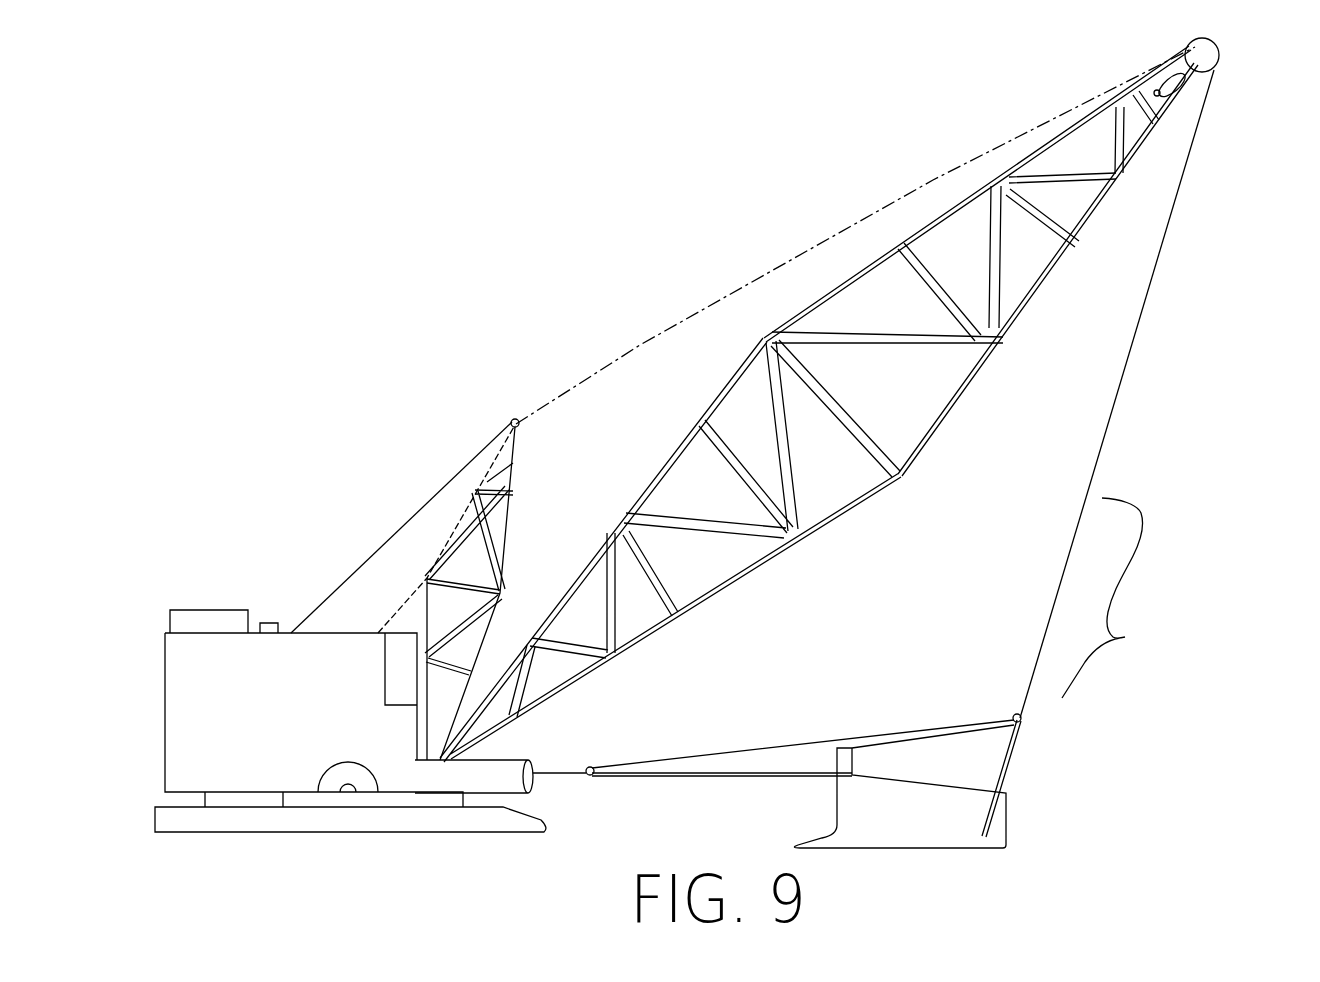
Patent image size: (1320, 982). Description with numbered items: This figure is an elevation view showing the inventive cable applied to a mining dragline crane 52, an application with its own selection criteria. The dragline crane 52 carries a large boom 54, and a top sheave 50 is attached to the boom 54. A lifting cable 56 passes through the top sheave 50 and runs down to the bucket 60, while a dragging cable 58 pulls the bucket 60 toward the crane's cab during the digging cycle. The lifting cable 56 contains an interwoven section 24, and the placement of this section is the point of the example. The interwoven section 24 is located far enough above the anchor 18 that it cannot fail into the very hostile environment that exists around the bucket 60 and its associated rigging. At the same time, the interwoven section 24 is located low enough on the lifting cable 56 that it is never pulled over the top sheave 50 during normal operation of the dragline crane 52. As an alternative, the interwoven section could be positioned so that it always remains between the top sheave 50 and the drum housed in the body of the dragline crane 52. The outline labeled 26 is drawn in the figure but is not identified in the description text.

The anchor 18 is at (1020, 727).
The interwoven section 24 is at (1108, 440).
The counterweight outline 26 is at (1125, 637).
The top sheave 50 is at (1212, 36).
The mining dragline crane 52 is at (523, 227).
The boom 54 is at (870, 270).
The lifting cable 56 is at (1213, 83).
The dragging cable 58 is at (565, 778).
The bucket 60 is at (1007, 818).